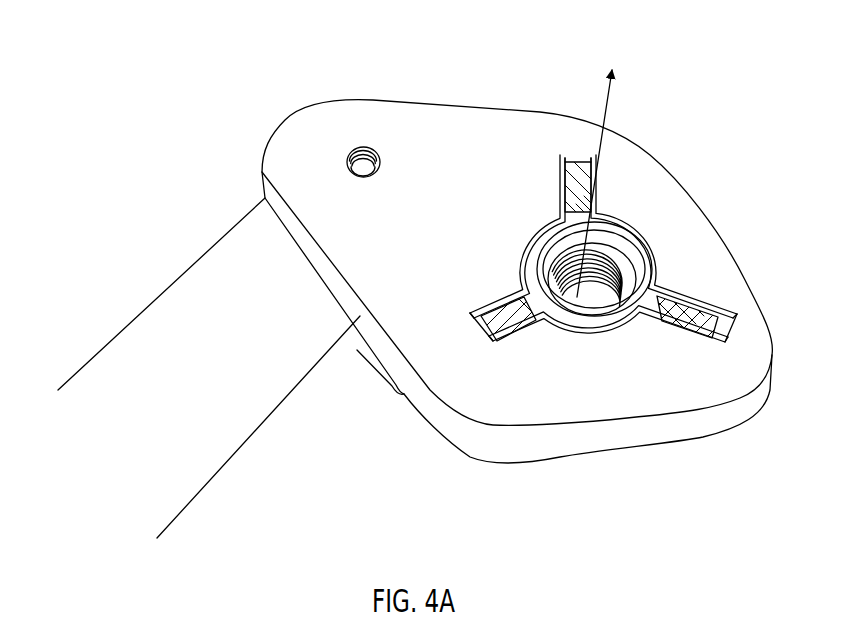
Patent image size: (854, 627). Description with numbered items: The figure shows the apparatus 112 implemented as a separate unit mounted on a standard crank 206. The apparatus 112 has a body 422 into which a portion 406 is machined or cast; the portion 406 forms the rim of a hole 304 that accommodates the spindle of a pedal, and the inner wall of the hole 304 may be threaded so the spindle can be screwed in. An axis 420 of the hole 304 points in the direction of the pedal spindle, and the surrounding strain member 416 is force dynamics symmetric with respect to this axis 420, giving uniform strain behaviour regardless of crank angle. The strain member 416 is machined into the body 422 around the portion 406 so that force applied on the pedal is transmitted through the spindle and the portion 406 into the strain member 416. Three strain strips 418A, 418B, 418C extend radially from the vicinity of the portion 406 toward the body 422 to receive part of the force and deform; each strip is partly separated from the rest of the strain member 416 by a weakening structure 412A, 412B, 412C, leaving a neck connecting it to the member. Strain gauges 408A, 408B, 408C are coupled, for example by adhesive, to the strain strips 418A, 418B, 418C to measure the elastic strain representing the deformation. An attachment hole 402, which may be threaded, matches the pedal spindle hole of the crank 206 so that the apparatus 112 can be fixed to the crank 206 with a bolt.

The apparatus 112 is at (517, 253).
The body 422 is at (483, 122).
The crank 206 is at (183, 268).
The attachment hole 402 is at (376, 190).
The hole 304 is at (570, 302).
The portion 406 is at (581, 322).
The strain member 416 is at (630, 229).
The axis 420 is at (615, 98).
The weakening structure 412A is at (522, 250).
The weakening structure 412B is at (660, 262).
The weakening structure 412C is at (605, 334).
The strain gauge 408A is at (480, 330).
The strain gauge 408B is at (572, 160).
The strain gauge 408C is at (719, 330).
The strain strip 418A is at (491, 296).
The strain strip 418B is at (556, 183).
The strain strip 418C is at (685, 340).